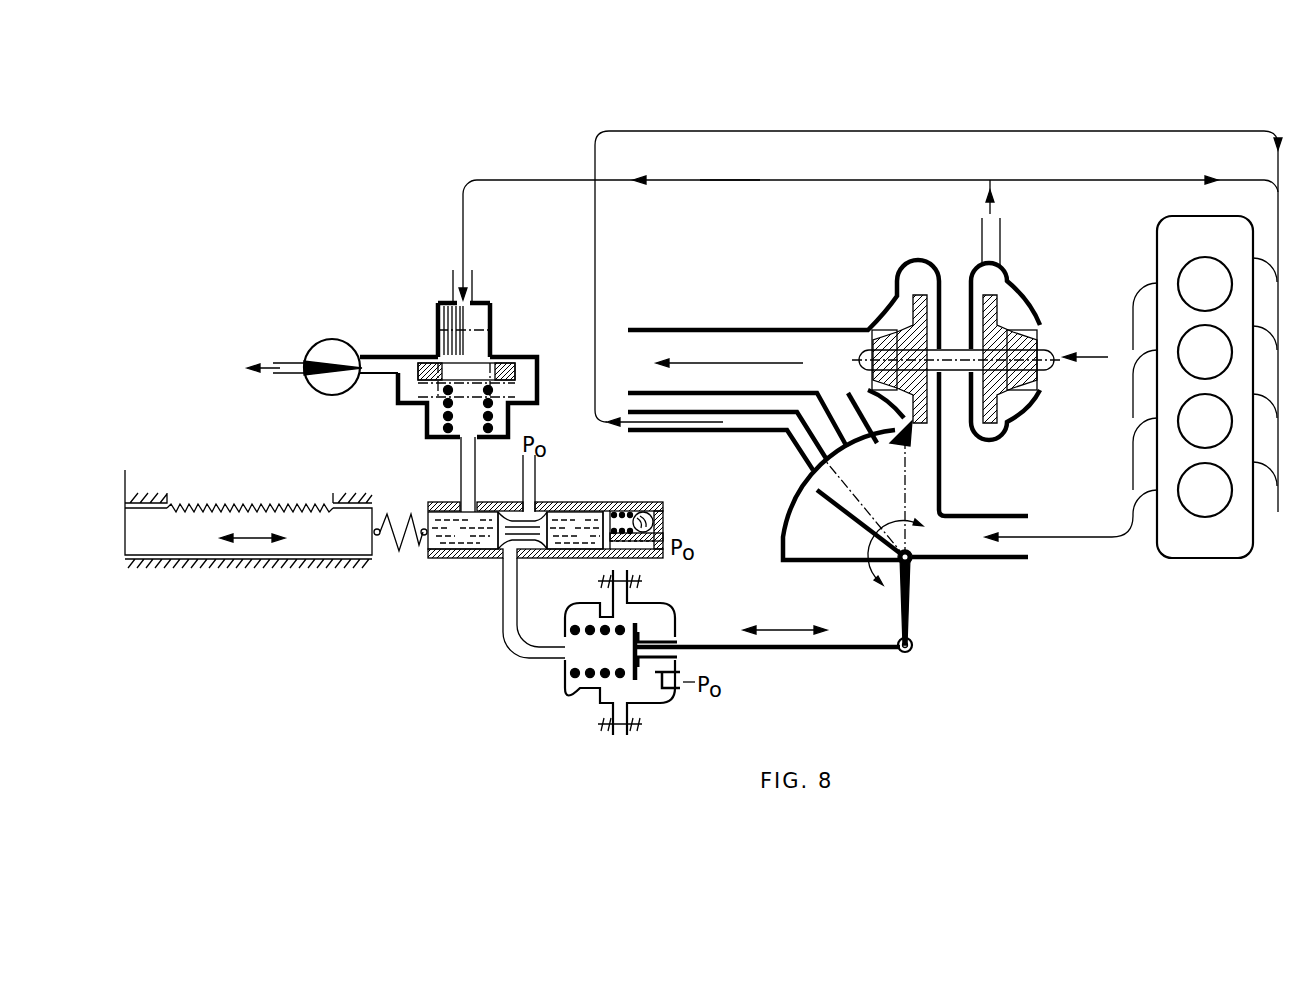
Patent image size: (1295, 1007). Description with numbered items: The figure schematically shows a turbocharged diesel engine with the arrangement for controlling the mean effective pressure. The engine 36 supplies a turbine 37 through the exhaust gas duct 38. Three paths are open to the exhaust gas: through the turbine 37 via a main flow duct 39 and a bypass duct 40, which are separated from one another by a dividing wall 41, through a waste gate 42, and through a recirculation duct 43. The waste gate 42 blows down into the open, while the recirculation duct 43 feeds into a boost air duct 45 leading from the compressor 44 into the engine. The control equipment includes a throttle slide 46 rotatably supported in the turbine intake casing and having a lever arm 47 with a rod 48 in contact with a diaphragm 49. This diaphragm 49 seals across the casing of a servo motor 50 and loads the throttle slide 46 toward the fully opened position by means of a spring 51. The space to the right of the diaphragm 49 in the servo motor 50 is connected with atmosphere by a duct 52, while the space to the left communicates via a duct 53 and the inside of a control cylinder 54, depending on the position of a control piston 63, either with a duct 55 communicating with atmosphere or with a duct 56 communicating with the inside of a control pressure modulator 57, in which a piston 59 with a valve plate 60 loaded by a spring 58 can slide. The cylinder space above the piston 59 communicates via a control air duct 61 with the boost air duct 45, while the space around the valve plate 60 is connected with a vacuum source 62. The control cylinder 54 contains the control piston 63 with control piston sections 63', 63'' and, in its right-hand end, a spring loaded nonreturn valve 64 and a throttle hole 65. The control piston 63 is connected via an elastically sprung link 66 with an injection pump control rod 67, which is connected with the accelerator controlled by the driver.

The engine 36 is at (1165, 247).
The turbine 37 is at (897, 308).
The exhaust gas duct 38 is at (964, 550).
The main flow duct 39 is at (923, 440).
The bypass duct 40 is at (880, 442).
The dividing wall 41 is at (918, 450).
The waste gate 42 is at (845, 427).
The recirculation duct 43 is at (1241, 122).
The compressor 44 is at (1017, 311).
The boost air duct 45 is at (1097, 181).
The throttle slide 46 is at (828, 550).
The lever arm 47 is at (908, 605).
The rod 48 is at (779, 652).
The diaphragm 49 is at (632, 629).
The servo motor 50 is at (588, 705).
The spring 51 is at (585, 676).
The duct 52 is at (676, 690).
The duct 53 is at (513, 636).
The control cylinder 54 is at (486, 560).
The duct 55 is at (534, 479).
The duct 56 is at (466, 475).
The control pressure modulator 57 is at (520, 354).
The spring 58 is at (490, 427).
The piston 59 is at (480, 301).
The valve plate 60 is at (497, 372).
The control air duct 61 is at (700, 183).
The vacuum source 62 is at (323, 339).
The control piston 63 is at (515, 502).
The control piston section 63' is at (457, 562).
The control piston section 63'' is at (596, 501).
The spring loaded nonreturn valve 64 is at (651, 524).
The throttle hole 65 is at (665, 551).
The elastically sprung link 66 is at (407, 540).
The injection pump control rod 67 is at (323, 545).